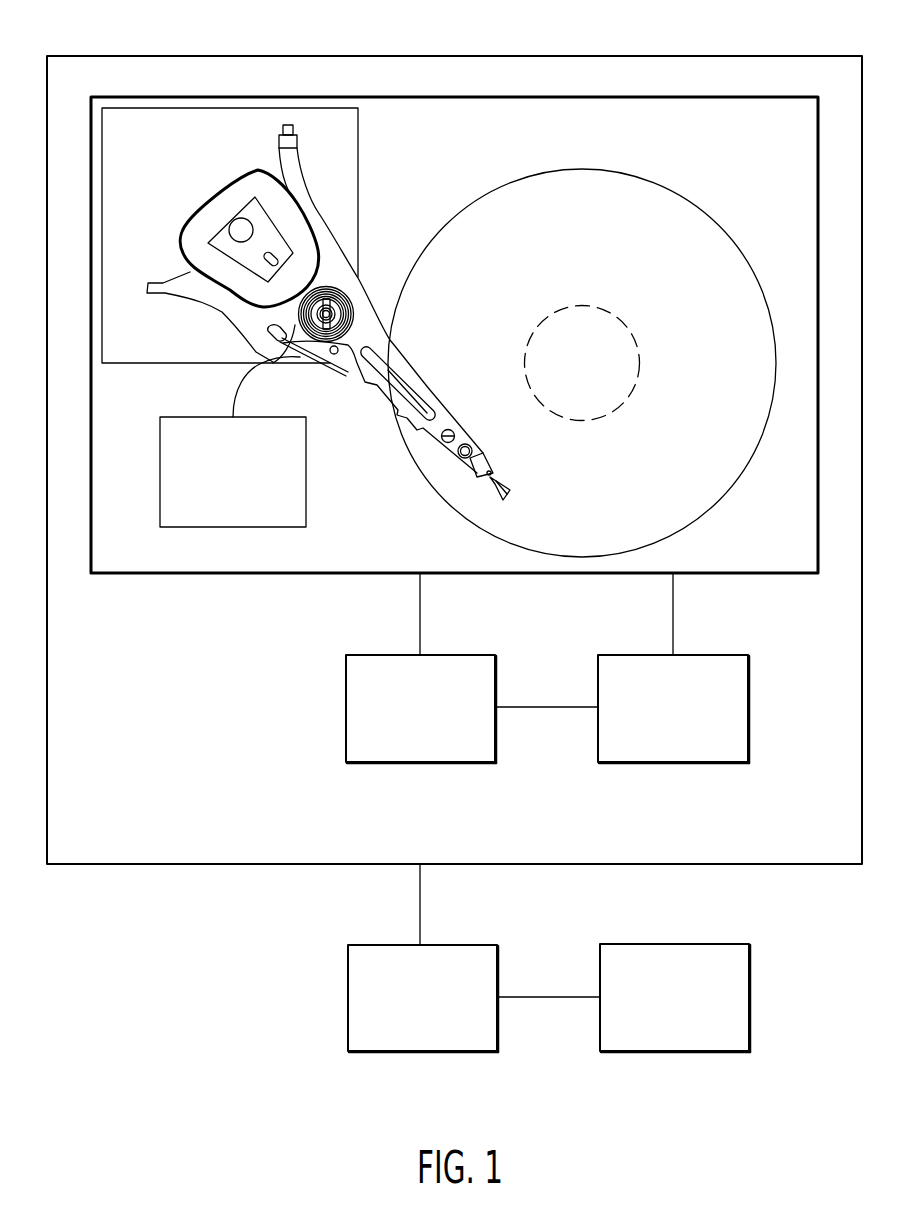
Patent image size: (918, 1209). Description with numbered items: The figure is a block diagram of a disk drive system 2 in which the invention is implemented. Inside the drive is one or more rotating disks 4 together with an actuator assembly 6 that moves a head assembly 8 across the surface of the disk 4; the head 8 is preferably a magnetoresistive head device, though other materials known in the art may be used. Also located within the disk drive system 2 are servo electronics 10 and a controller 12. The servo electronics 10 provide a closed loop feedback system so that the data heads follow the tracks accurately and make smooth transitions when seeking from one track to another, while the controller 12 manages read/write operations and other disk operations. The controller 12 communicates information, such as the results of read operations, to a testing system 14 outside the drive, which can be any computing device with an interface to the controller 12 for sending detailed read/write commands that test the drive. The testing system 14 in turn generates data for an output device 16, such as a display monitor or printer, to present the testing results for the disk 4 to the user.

The disk drive system 2 is at (453, 55).
The rotating disk 4 is at (571, 269).
The actuator assembly 6 is at (373, 388).
The head assembly 8 is at (493, 487).
The servo electronics 10 is at (427, 763).
The controller 12 is at (678, 763).
The testing system 14 is at (429, 1052).
The output device 16 is at (682, 1052).